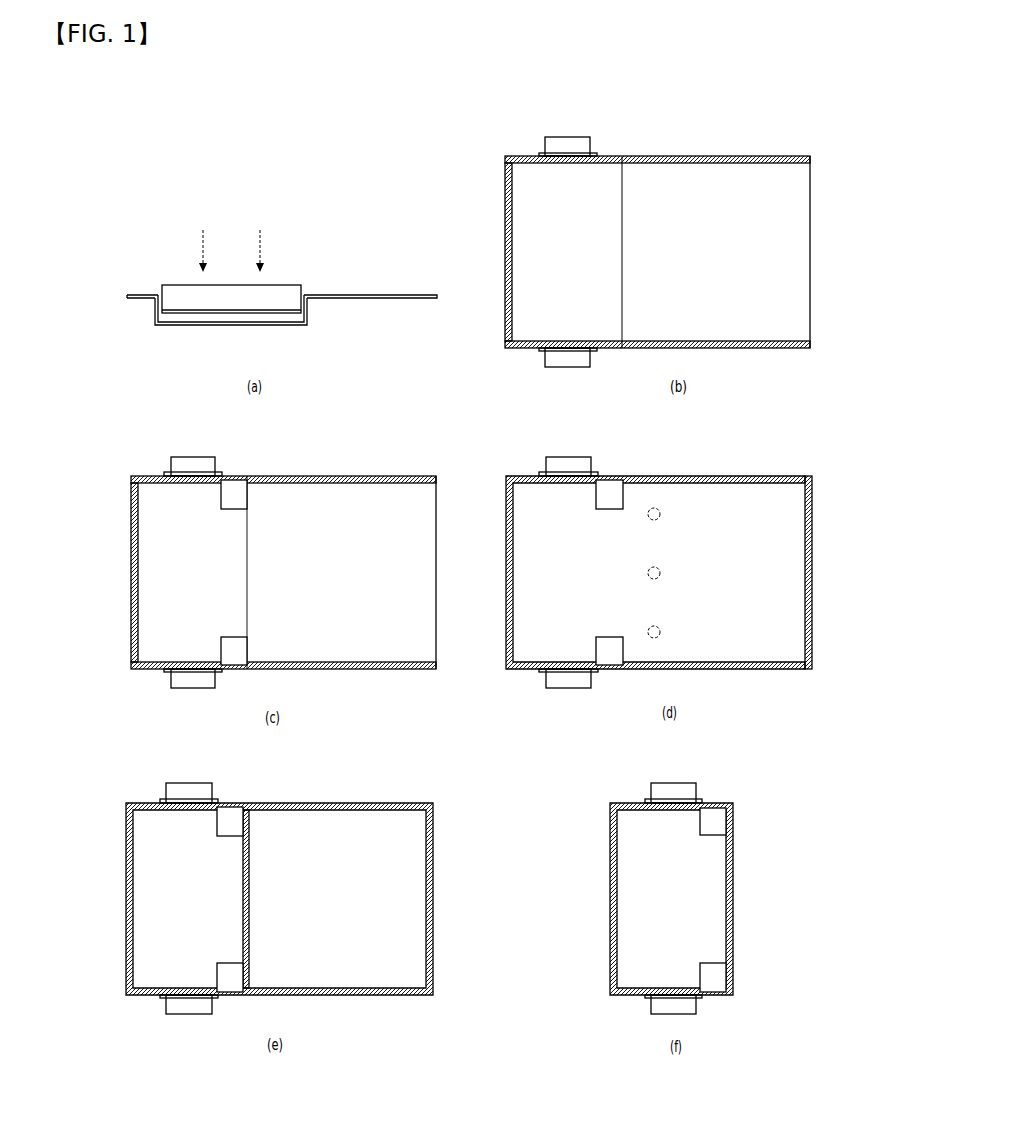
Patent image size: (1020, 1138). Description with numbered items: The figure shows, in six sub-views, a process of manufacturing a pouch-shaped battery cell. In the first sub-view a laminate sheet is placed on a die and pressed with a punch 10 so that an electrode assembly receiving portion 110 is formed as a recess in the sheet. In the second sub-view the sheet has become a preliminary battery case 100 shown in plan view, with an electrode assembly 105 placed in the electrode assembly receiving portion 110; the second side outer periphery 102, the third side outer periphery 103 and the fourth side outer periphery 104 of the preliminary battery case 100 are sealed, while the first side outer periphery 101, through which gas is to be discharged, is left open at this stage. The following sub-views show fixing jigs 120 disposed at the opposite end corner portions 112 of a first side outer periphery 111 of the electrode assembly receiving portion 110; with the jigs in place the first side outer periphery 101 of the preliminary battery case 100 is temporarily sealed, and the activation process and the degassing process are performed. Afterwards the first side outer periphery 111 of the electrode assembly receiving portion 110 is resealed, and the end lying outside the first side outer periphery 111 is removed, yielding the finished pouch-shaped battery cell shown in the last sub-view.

The punch 10 is at (188, 284).
The preliminary battery case 100 is at (350, 296).
The first side outer periphery of the preliminary battery case 101 is at (812, 212).
The second side outer periphery 102 is at (753, 157).
The third side outer periphery 103 is at (503, 312).
The fourth side outer periphery 104 is at (728, 348).
The electrode assembly 105 is at (547, 140).
The electrode assembly receiving portion 110 is at (172, 325).
The first side outer periphery of the electrode assembly receiving portion 111 is at (247, 603).
The end corner portions 112 is at (625, 157).
The fixing jig 120 is at (233, 490).